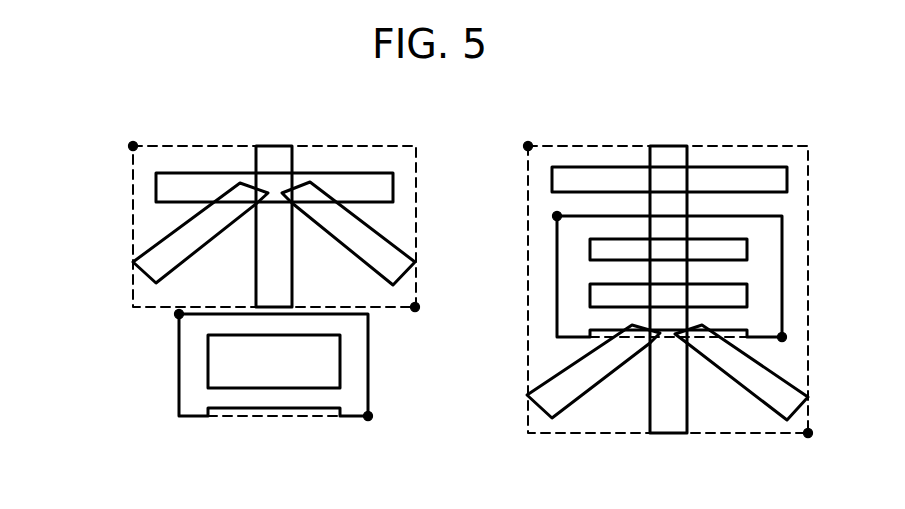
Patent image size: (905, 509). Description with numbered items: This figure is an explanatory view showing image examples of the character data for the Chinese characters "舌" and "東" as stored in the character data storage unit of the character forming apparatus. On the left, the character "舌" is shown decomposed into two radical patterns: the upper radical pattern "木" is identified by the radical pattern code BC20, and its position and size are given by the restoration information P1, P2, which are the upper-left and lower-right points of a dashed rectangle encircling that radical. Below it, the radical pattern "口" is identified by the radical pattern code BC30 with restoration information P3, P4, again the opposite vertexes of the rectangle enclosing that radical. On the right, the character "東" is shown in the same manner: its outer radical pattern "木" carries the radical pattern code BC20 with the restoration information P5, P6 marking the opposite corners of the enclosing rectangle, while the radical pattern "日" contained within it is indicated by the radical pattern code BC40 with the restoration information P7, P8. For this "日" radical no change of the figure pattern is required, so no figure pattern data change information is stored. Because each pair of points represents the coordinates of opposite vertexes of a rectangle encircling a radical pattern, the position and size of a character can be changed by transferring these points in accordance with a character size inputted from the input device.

The radical pattern code BC20 is at (133, 227).
The radical pattern code BC30 is at (179, 396).
The radical pattern code BC40 is at (783, 232).
The restoration information point P1 is at (116, 145).
The restoration information point P2 is at (417, 326).
The restoration information point P3 is at (160, 325).
The restoration information point P4 is at (370, 435).
The restoration information point P5 is at (508, 145).
The restoration information point P6 is at (807, 455).
The restoration information point P7 is at (537, 218).
The restoration information point P8 is at (785, 355).